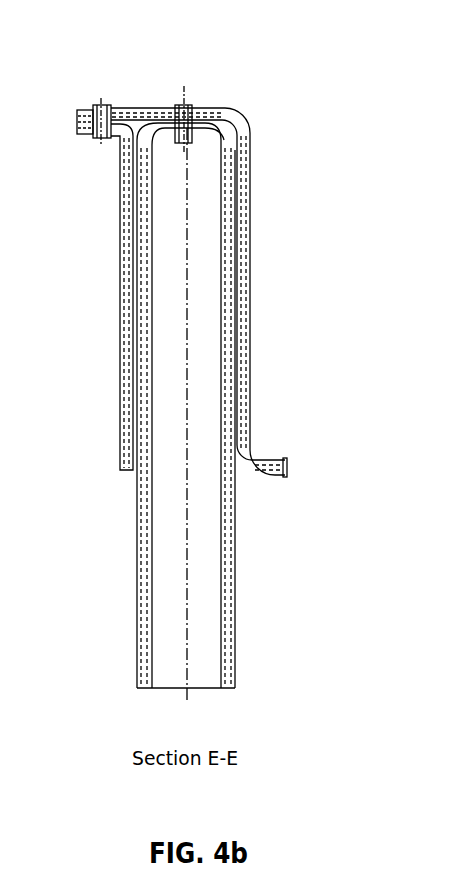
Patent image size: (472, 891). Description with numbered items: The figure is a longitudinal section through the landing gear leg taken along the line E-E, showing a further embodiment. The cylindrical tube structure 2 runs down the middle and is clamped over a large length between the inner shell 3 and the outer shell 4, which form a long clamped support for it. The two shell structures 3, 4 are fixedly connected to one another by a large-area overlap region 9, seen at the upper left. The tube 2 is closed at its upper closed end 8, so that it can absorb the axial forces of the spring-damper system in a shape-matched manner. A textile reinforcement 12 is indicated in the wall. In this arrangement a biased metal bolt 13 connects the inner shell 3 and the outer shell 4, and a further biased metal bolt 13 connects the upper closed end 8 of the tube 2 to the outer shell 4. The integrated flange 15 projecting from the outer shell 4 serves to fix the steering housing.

The tube structure 2 is at (230, 635).
The inner shell 3 is at (128, 347).
The outer shell 4 is at (243, 265).
The upper closed end 8 is at (245, 130).
The overlap region 9 is at (132, 92).
The textile reinforcement 12 is at (247, 190).
The biased metal bolt 13 is at (113, 107).
The integrated flange 15 is at (287, 464).